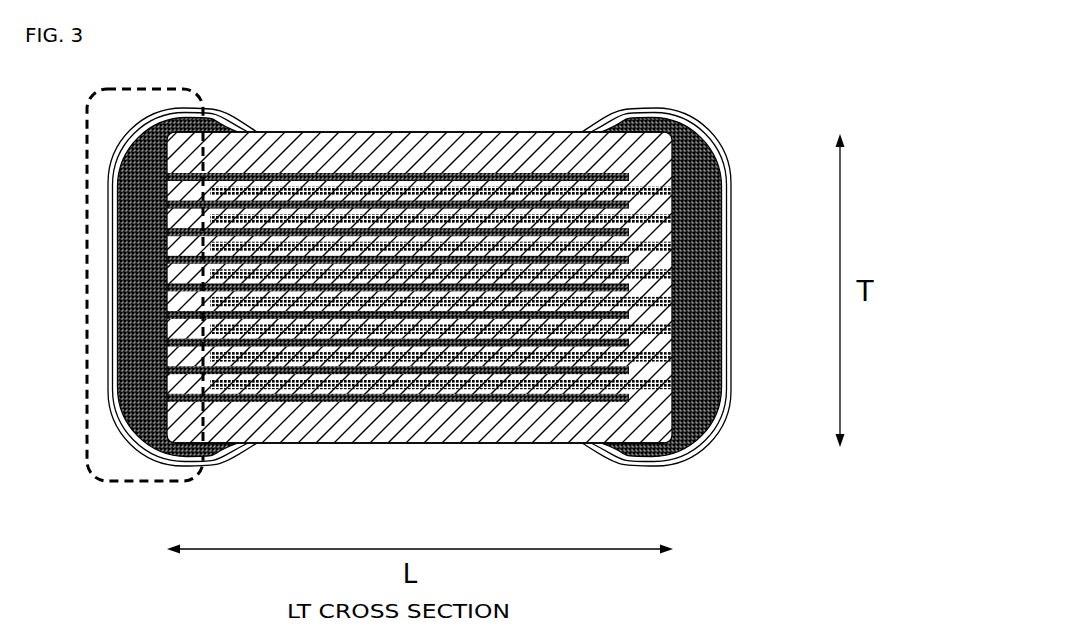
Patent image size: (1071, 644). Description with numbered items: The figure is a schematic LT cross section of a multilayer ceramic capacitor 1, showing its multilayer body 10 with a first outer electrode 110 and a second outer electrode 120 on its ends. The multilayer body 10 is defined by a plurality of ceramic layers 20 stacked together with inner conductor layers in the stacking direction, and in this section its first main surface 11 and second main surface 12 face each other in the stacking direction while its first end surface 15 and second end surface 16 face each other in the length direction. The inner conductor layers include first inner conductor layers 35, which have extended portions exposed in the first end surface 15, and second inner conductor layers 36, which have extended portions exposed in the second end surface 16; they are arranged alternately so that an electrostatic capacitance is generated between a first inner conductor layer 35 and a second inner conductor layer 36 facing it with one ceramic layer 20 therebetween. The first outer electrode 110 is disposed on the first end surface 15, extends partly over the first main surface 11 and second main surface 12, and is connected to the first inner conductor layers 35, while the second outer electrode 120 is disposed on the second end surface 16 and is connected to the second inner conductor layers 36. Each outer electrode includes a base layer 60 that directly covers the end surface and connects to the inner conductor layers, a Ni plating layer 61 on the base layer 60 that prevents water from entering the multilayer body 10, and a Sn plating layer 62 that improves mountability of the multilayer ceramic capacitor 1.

The multilayer ceramic capacitor 1 is at (690, 75).
The multilayer body 10 is at (419, 287).
The first main surface 11 is at (323, 132).
The second main surface 12 is at (447, 447).
The first end surface 15 is at (167, 245).
The second end surface 16 is at (674, 258).
The ceramic layer 20 is at (419, 347).
The first inner conductor layer 35 is at (182, 415).
The second inner conductor layer 36 is at (638, 437).
The base layer 60 is at (137, 313).
The Ni plating layer 61 is at (117, 292).
The Sn plating layer 62 is at (108, 275).
The first outer electrode 110 is at (106, 162).
The second outer electrode 120 is at (736, 160).